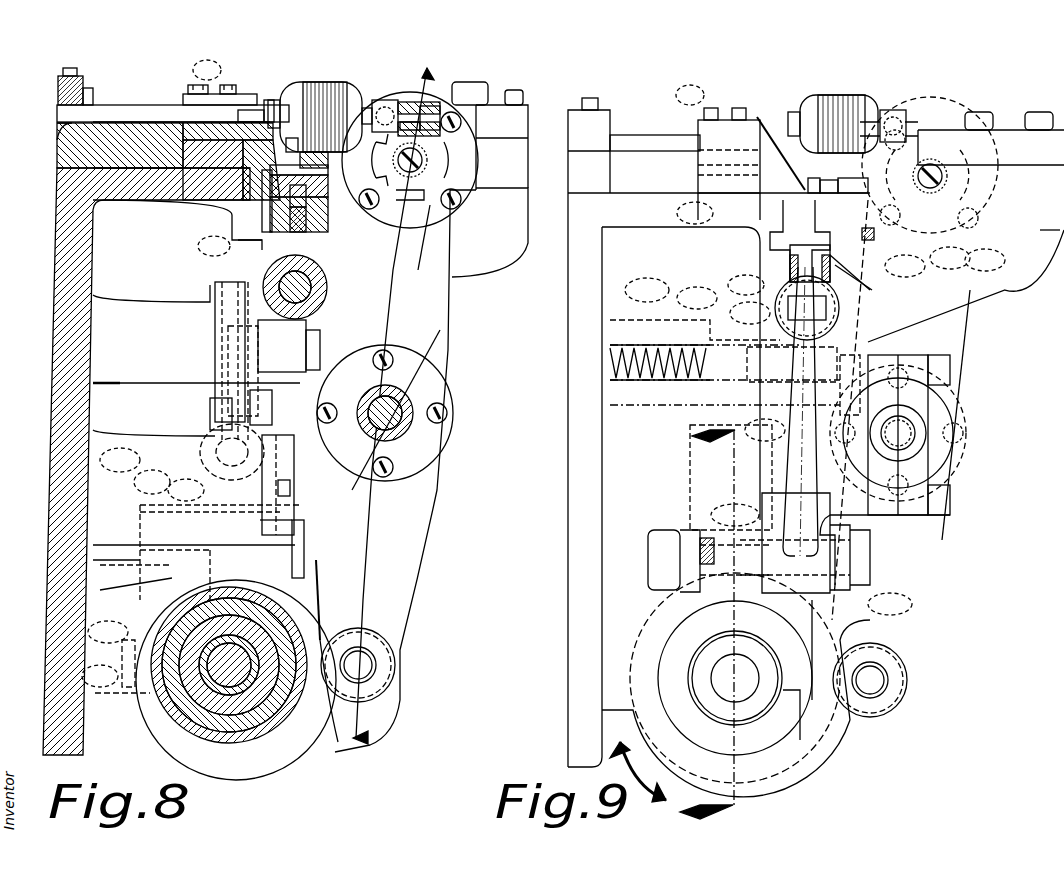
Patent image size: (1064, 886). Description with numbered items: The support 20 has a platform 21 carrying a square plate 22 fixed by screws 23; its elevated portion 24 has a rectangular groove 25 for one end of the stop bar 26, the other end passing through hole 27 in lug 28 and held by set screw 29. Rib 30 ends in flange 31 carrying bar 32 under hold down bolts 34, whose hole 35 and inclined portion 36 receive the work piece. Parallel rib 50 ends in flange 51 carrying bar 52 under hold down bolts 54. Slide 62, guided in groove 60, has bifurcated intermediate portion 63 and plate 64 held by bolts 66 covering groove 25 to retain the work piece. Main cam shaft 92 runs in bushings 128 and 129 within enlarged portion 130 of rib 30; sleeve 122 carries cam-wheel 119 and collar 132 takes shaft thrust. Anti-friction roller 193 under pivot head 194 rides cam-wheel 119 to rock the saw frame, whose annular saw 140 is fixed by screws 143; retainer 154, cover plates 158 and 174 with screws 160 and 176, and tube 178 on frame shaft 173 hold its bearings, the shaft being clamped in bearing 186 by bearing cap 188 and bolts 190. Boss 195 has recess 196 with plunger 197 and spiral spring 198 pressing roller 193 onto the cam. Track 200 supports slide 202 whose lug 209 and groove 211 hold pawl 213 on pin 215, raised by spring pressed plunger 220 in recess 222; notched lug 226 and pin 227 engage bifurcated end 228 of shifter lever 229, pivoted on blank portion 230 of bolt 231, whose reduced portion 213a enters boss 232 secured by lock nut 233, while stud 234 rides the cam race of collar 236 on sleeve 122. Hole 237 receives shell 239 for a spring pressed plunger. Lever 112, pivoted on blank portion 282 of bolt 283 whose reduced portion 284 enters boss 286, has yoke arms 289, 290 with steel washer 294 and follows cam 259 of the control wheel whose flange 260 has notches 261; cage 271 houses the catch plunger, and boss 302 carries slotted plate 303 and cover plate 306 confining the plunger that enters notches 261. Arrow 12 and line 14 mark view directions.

In FIG. 9, the direction arrow 12 is at (672, 621).
In FIG. 8, the section line 14 is at (405, 70).
In FIG. 8, the frame 20 is at (60, 378).
In FIG. 9, the frame 20 is at (568, 352).
In FIG. 8, the frame top wall 21 is at (172, 185).
In FIG. 9, the frame top wall 21 is at (722, 210).
In FIG. 8, the top block 22 is at (135, 150).
In FIG. 9, the top block 22 is at (648, 165).
In FIG. 8, the coupling pin 23 is at (300, 140).
In FIG. 8, the screw 24 is at (205, 88).
In FIG. 9, the screw 24 is at (700, 140).
In FIG. 8, the spacer 25 is at (248, 108).
In FIG. 8, the top bar 26 is at (122, 112).
In FIG. 9, the top bar 26 is at (630, 140).
In FIG. 8, the frame corner 27 is at (58, 135).
In FIG. 8, the block 28 is at (90, 88).
In FIG. 9, the block 28 is at (600, 130).
In FIG. 8, the screw 29 is at (70, 76).
In FIG. 9, the frame edge 30 is at (1000, 292).
In FIG. 9, the frame member 31 is at (1028, 200).
In FIG. 8, the bearing block 32 is at (398, 103).
In FIG. 9, the bearing block 32 is at (1005, 140).
In FIG. 9, the screw 34 is at (1036, 112).
In FIG. 8, the bushing 35 is at (428, 108).
In FIG. 8, the slotted hole 36 is at (448, 142).
In FIG. 8, the frame part 50 is at (470, 276).
In FIG. 8, the frame part 51 is at (505, 172).
In FIG. 8, the frame part 52 is at (505, 125).
In FIG. 8, the screws 54 is at (478, 82).
In FIG. 8, the coupling 60 is at (280, 100).
In FIG. 9, the coupling 60 is at (695, 213).
In FIG. 8, the block 62 is at (210, 170).
In FIG. 9, the block 62 is at (742, 180).
In FIG. 8, the motor 63 is at (306, 85).
In FIG. 9, the motor 63 is at (800, 130).
In FIG. 8, the motor mount 64 is at (272, 100).
In FIG. 9, the motor mount 64 is at (750, 130).
In FIG. 8, the clamp 66 is at (192, 85).
In FIG. 9, the clamp 66 is at (712, 103).
In FIG. 8, the drive wheel 92 is at (262, 712).
In FIG. 9, the drive wheel 92 is at (745, 680).
In FIG. 8, the roller 112 is at (182, 470).
In FIG. 8, the housing 119 is at (322, 748).
In FIG. 9, the housing 119 is at (778, 780).
In FIG. 8, the ring 122 is at (215, 700).
In FIG. 8, the hub 128 is at (232, 700).
In FIG. 8, the bushing 129 is at (202, 700).
In FIG. 8, the shaft 130 is at (170, 700).
In FIG. 9, the wheel 132 is at (748, 712).
In FIG. 8, the bearing 140 is at (406, 172).
In FIG. 9, the bearing 140 is at (920, 195).
In FIG. 9, the gear 143 is at (948, 176).
In FIG. 8, the plate 154 is at (428, 212).
In FIG. 9, the plate 154 is at (950, 258).
In FIG. 8, the disc 158 is at (465, 180).
In FIG. 9, the disc 158 is at (905, 266).
In FIG. 8, the body edge 160 is at (452, 274).
In FIG. 9, the body edge 160 is at (985, 260).
In FIG. 8, the shaft 173 is at (405, 400).
In FIG. 9, the shaft 173 is at (905, 438).
In FIG. 8, the plate 174 is at (408, 460).
In FIG. 9, the plate 174 is at (950, 465).
In FIG. 8, the disc 176 is at (440, 420).
In FIG. 8, the hub 178 is at (372, 440).
In FIG. 9, the hub 178 is at (915, 420).
In FIG. 9, the bracket 186 is at (873, 395).
In FIG. 9, the housing 188 is at (928, 408).
In FIG. 9, the block 190 is at (940, 372).
In FIG. 8, the roller 193 is at (388, 680).
In FIG. 9, the roller 193 is at (892, 695).
In FIG. 8, the pin 194 is at (368, 664).
In FIG. 9, the pin 194 is at (880, 676).
In FIG. 8, the slide 195 is at (182, 318).
In FIG. 9, the slide 195 is at (756, 395).
In FIG. 9, the slot 196 is at (672, 345).
In FIG. 8, the block 197 is at (312, 348).
In FIG. 9, the block 197 is at (735, 358).
In FIG. 9, the spring 198 is at (634, 345).
In FIG. 8, the bushing 200 is at (300, 232).
In FIG. 8, the shaft 202 is at (332, 216).
In FIG. 9, the shaft 202 is at (800, 228).
In FIG. 8, the collar 209 is at (330, 160).
In FIG. 9, the collar 209 is at (820, 188).
In FIG. 8, the washer 211 is at (330, 172).
In FIG. 9, the coupling 213 is at (815, 180).
In FIG. 9, the coupling part 213a is at (735, 539).
In FIG. 8, the screw 215 is at (215, 246).
In FIG. 8, the bushing 220 is at (325, 212).
In FIG. 8, the plate 222 is at (248, 232).
In FIG. 9, the link 226 is at (840, 262).
In FIG. 9, the bearing 227 is at (783, 307).
In FIG. 9, the link 228 is at (880, 270).
In FIG. 9, the lever 229 is at (800, 452).
In FIG. 9, the pin 230 is at (890, 604).
In FIG. 9, the bolt 231 is at (872, 560).
In FIG. 9, the slide block 232 is at (700, 500).
In FIG. 9, the bolt head 233 is at (665, 540).
In FIG. 9, the arm 234 is at (800, 700).
In FIG. 9, the cam 236 is at (698, 730).
In FIG. 9, the screw 237 is at (920, 191).
In FIG. 9, the collar 239 is at (850, 195).
In FIG. 8, the rod 259 is at (225, 410).
In FIG. 8, the block 260 is at (262, 420).
In FIG. 8, the block 261 is at (262, 400).
In FIG. 8, the roller 271 is at (325, 285).
In FIG. 8, the pin 282 is at (186, 520).
In FIG. 8, the plate 283 is at (308, 540).
In FIG. 8, the pin 284 is at (118, 490).
In FIG. 8, the plate 286 is at (104, 578).
In FIG. 8, the plate 289 is at (318, 580).
In FIG. 8, the pin 290 is at (142, 622).
In FIG. 8, the pin 294 is at (126, 672).
In FIG. 8, the slot 302 is at (158, 450).
In FIG. 8, the block 303 is at (278, 486).
In FIG. 8, the screw 306 is at (280, 500).